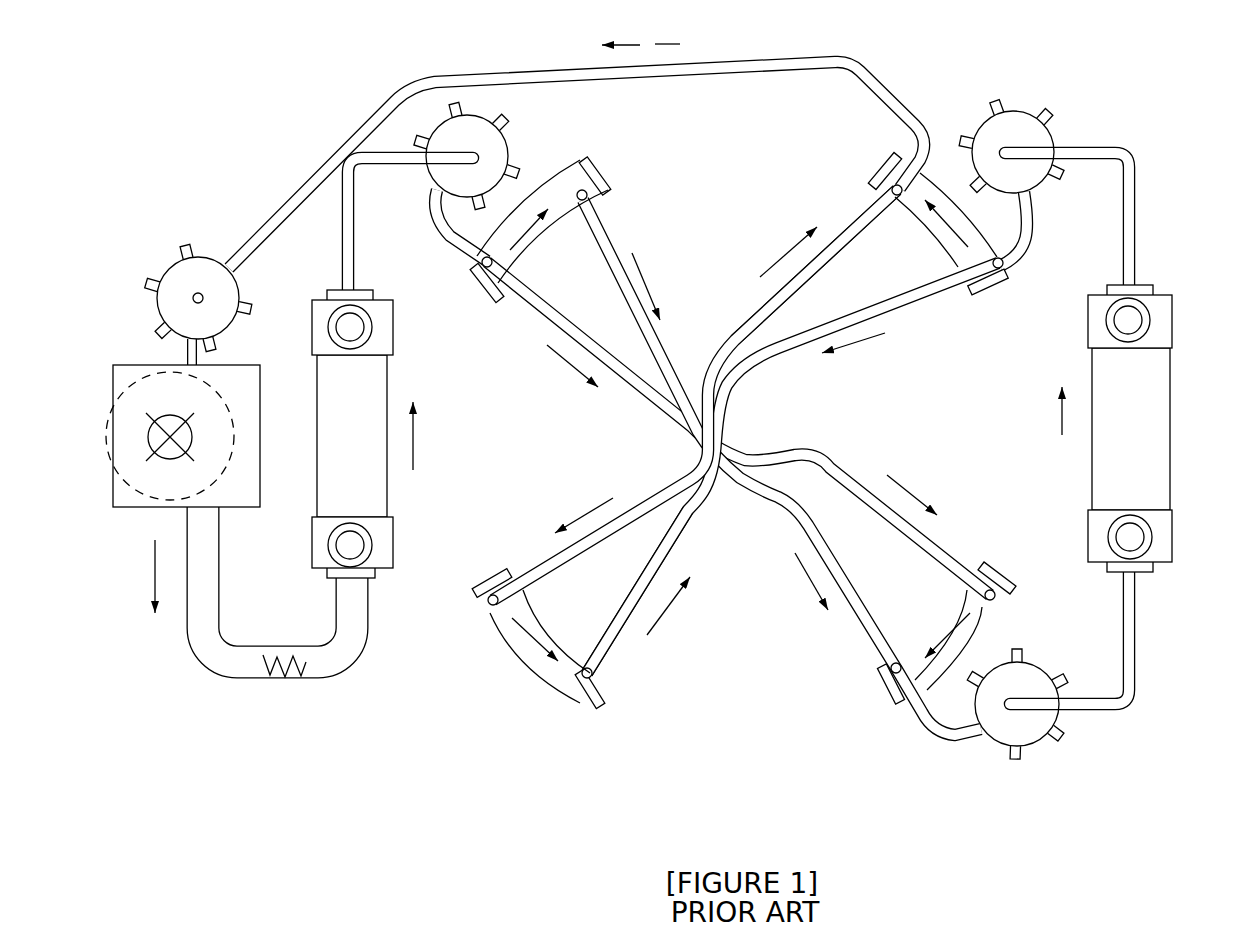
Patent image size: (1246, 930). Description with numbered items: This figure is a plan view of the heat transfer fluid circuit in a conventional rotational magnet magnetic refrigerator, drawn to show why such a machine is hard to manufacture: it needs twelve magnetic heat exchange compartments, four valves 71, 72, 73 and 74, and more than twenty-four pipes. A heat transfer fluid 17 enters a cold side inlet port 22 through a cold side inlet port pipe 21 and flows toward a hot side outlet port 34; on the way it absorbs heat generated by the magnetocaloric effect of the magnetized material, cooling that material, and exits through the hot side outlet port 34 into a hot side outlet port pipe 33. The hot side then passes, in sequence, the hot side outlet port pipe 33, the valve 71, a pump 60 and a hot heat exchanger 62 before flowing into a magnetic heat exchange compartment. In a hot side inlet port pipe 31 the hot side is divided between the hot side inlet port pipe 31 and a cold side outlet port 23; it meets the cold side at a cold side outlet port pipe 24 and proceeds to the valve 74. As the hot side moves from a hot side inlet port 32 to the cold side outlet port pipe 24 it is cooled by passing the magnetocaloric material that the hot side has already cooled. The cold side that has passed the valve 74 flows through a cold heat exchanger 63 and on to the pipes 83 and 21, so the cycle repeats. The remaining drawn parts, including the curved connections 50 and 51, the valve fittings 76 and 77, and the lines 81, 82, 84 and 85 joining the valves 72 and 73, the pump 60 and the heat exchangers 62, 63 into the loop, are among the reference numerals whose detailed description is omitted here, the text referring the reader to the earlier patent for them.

The heat transfer fluid 17 is at (285, 670).
The cold side inlet port pipe 21 is at (1043, 240).
The cold side inlet port 22 is at (1003, 265).
The cold side outlet port 23 is at (603, 235).
The cold side outlet port pipe 24 is at (578, 193).
The hot side inlet port pipe 31 is at (426, 208).
The hot side inlet port 32 is at (480, 258).
The hot side outlet port pipe 33 is at (860, 223).
The hot side outlet port 34 is at (898, 187).
The first arcuate hose 50 is at (978, 228).
The second arcuate hose 51 is at (553, 183).
The pump 60 is at (140, 410).
The hot heat exchanger 62 is at (327, 463).
The cold heat exchanger 63 is at (1173, 430).
The valve 71 is at (170, 280).
The valve 72 is at (482, 127).
The valve 73 is at (1008, 120).
The valve 74 is at (1020, 730).
The valve port 76 is at (472, 155).
The valve connecting line 77 is at (438, 192).
The pump outlet line 81 is at (187, 350).
The cylinder supply line 82 is at (357, 160).
The pipe 83 is at (1070, 148).
The cylinder return line 84 is at (1138, 600).
The pump return line 85 is at (195, 527).